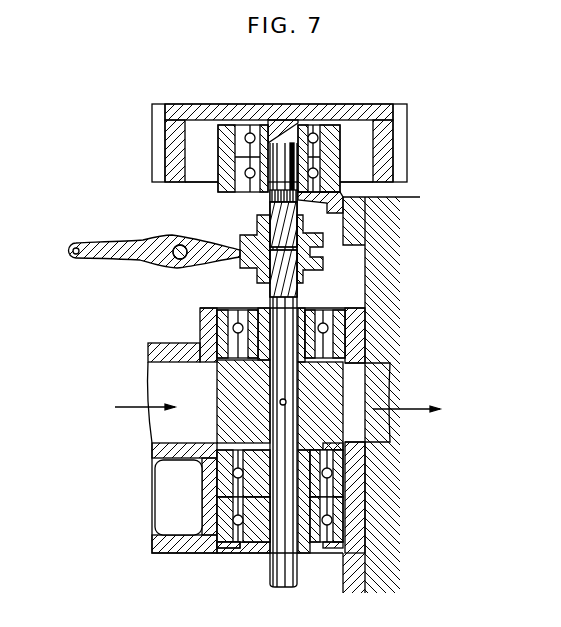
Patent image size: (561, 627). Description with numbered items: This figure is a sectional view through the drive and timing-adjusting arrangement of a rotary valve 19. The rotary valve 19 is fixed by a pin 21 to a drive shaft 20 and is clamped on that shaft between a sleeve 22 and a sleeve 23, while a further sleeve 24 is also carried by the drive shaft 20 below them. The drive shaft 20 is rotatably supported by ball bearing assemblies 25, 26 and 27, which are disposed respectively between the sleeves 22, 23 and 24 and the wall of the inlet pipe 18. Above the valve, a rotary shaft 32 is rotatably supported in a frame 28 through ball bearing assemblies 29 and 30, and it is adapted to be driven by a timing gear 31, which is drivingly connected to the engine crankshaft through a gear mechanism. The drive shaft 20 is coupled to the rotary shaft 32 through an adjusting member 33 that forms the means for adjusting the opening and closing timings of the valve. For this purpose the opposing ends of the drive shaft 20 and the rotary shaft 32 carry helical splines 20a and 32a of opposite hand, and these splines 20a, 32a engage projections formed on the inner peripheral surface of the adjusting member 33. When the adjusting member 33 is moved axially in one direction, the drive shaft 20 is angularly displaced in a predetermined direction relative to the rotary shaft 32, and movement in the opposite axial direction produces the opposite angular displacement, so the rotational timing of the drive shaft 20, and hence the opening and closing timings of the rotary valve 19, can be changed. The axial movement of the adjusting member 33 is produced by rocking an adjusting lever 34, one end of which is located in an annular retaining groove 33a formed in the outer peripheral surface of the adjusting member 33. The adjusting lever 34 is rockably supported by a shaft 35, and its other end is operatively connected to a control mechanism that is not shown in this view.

The inlet pipe 18 is at (148, 356).
The rotary valve 19 is at (222, 382).
The drive shaft 20 is at (277, 588).
The helical splines 20a is at (262, 293).
The pin 21 is at (287, 402).
The sleeve 22 is at (345, 360).
The sleeve 23 is at (343, 450).
The further sleeve 24 is at (240, 556).
The ball bearing assembly 25 is at (350, 318).
The ball bearing assembly 26 is at (345, 488).
The ball bearing assembly 27 is at (345, 530).
The frame 28 is at (326, 246).
The ball bearing assembly 29 is at (250, 124).
The ball bearing assembly 30 is at (218, 193).
The timing gear 31 is at (368, 112).
The rotary shaft 32 is at (268, 193).
The helical splines 32a is at (343, 213).
The adjusting member 33 is at (322, 262).
The annular retaining groove 33a is at (323, 251).
The adjusting lever 34 is at (103, 246).
The shaft 35 is at (178, 236).